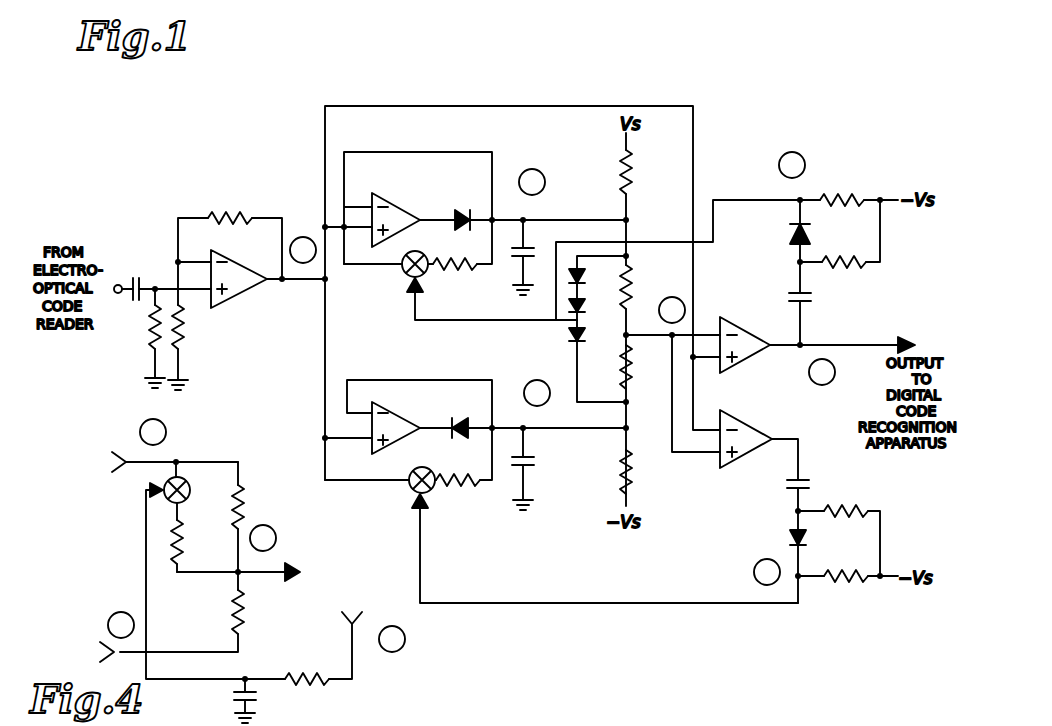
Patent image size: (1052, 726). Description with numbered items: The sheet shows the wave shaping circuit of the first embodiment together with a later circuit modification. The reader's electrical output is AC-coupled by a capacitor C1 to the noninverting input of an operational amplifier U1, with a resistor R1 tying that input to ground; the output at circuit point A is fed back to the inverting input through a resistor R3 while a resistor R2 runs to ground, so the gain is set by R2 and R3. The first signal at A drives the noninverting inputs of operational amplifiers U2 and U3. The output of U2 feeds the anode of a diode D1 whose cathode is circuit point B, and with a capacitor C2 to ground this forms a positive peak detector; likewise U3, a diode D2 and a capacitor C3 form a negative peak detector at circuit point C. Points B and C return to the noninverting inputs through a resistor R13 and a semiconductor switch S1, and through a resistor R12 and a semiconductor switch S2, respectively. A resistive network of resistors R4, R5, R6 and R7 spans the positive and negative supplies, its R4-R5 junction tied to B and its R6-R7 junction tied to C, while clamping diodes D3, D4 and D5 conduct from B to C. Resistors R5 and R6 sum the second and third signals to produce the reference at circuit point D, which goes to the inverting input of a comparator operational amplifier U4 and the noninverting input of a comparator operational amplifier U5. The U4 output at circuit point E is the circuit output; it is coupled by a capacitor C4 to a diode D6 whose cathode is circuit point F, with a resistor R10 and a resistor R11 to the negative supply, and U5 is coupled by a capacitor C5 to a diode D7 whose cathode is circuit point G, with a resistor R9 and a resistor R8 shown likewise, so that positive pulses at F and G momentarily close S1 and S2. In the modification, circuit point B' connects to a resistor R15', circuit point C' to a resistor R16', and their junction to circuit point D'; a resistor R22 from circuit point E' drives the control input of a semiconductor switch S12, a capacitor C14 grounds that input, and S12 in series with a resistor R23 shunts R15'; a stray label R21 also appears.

In FIG. 1, the capacitor C1 is at (137, 276).
In FIG. 1, the resistor R1 is at (145, 338).
In FIG. 1, the resistor R2 is at (185, 330).
In FIG. 1, the resistor R3 is at (231, 217).
In FIG. 1, the operational amplifier U1 is at (240, 300).
In FIG. 1, the circuit point A is at (325, 279).
In FIG. 1, the operational amplifier U2 is at (406, 208).
In FIG. 1, the diode D1 is at (463, 210).
In FIG. 1, the circuit point B is at (532, 194).
In FIG. 1, the capacitor C2 is at (513, 269).
In FIG. 1, the resistor R13 is at (466, 260).
In FIG. 1, the semiconductor switch S1 is at (425, 275).
In FIG. 1, the operational amplifier U3 is at (406, 416).
In FIG. 1, the diode D2 is at (463, 417).
In FIG. 1, the circuit point C is at (536, 404).
In FIG. 1, the capacitor C3 is at (535, 464).
In FIG. 1, the resistor R12 is at (469, 476).
In FIG. 1, the semiconductor switch S2 is at (432, 491).
In FIG. 1, the resistor R4 is at (633, 176).
In FIG. 1, the resistor R5 is at (633, 293).
In FIG. 1, the resistor R6 is at (633, 373).
In FIG. 1, the resistor R7 is at (633, 485).
In FIG. 1, the diode D3 is at (582, 272).
In FIG. 1, the diode D4 is at (582, 306).
In FIG. 1, the diode D5 is at (582, 336).
In FIG. 1, the circuit point D is at (672, 316).
In FIG. 1, the operational amplifier U4 is at (758, 328).
In FIG. 1, the operational amplifier U5 is at (768, 422).
In FIG. 1, the circuit point F is at (800, 200).
In FIG. 1, the resistor R11 is at (848, 200).
In FIG. 1, the diode D6 is at (812, 236).
In FIG. 1, the resistor R10 is at (840, 248).
In FIG. 1, the capacitor C4 is at (812, 302).
In FIG. 1, the circuit point E is at (817, 365).
In FIG. 1, the capacitor C5 is at (786, 484).
In FIG. 1, the resistor R9 is at (852, 506).
In FIG. 1, the diode D7 is at (808, 542).
In FIG. 1, the circuit point G is at (798, 576).
In FIG. 1, the resistor R8 is at (845, 592).
In FIG. 4, the circuit point B' is at (158, 440).
In FIG. 4, the semiconductor switch S12 is at (152, 485).
In FIG. 4, the resistor R23 is at (180, 510).
In FIG. 4, the resistor R15' is at (261, 517).
In FIG. 4, the circuit point D' is at (263, 548).
In FIG. 4, the resistor R16' is at (208, 612).
In FIG. 4, the circuit point C' is at (121, 632).
In FIG. 4, the capacitor C14 is at (234, 694).
In FIG. 4, the resistor R22 is at (306, 670).
In FIG. 4, the circuit point E' is at (378, 639).
In FIG. 4, the resistor R21 is at (782, 718).